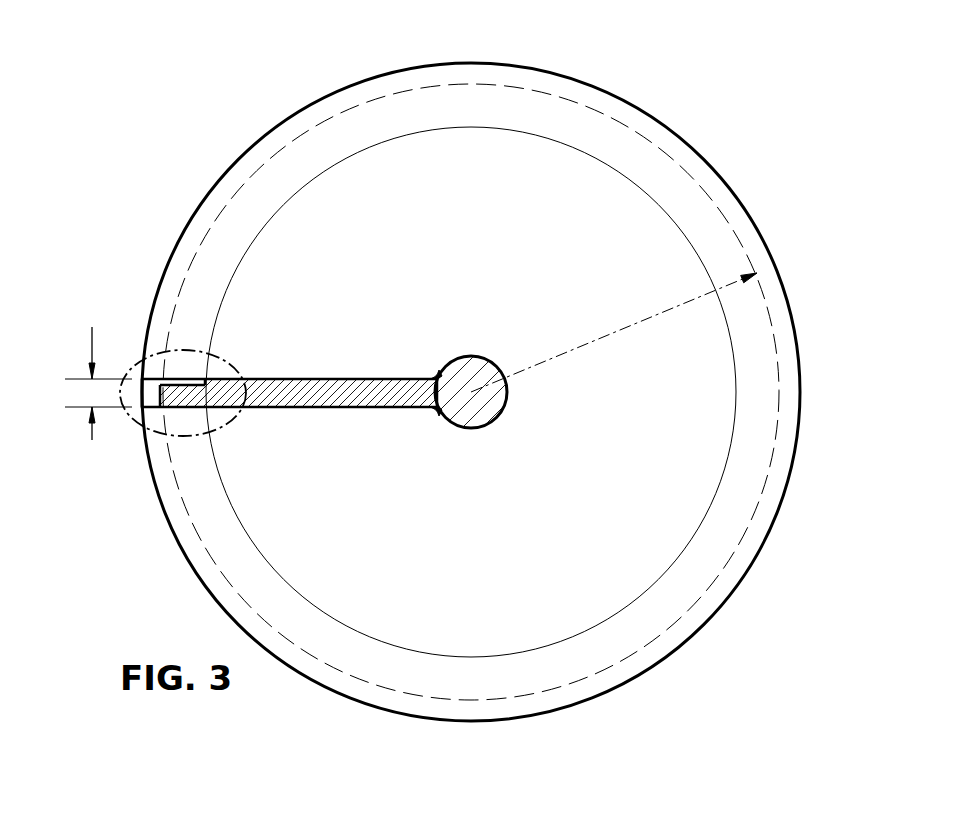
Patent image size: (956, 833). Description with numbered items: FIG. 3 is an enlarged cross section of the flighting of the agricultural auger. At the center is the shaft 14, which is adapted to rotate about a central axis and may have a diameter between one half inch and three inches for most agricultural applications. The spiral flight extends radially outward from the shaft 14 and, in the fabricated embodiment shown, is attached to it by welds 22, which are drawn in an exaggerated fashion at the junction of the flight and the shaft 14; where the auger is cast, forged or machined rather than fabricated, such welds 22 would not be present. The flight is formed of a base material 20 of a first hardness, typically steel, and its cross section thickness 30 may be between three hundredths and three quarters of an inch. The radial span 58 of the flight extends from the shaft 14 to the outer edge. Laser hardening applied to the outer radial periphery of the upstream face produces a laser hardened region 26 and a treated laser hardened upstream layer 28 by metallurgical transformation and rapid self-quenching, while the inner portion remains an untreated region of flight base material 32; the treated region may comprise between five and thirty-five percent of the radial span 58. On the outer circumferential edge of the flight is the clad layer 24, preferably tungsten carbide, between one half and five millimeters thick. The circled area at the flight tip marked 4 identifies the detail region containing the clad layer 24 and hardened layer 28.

The base material 20 is at (425, 215).
The laser hardened region 26 is at (242, 213).
The laser hardened upstream layer 28 is at (188, 382).
The clad layer 24 is at (150, 390).
The detail view reference 4 is at (223, 360).
The untreated region of flight base material 32 is at (353, 377).
The welds 22 is at (430, 372).
The shaft 14 is at (500, 360).
The radial span 58 is at (603, 337).
The cross section thickness 30 is at (92, 440).